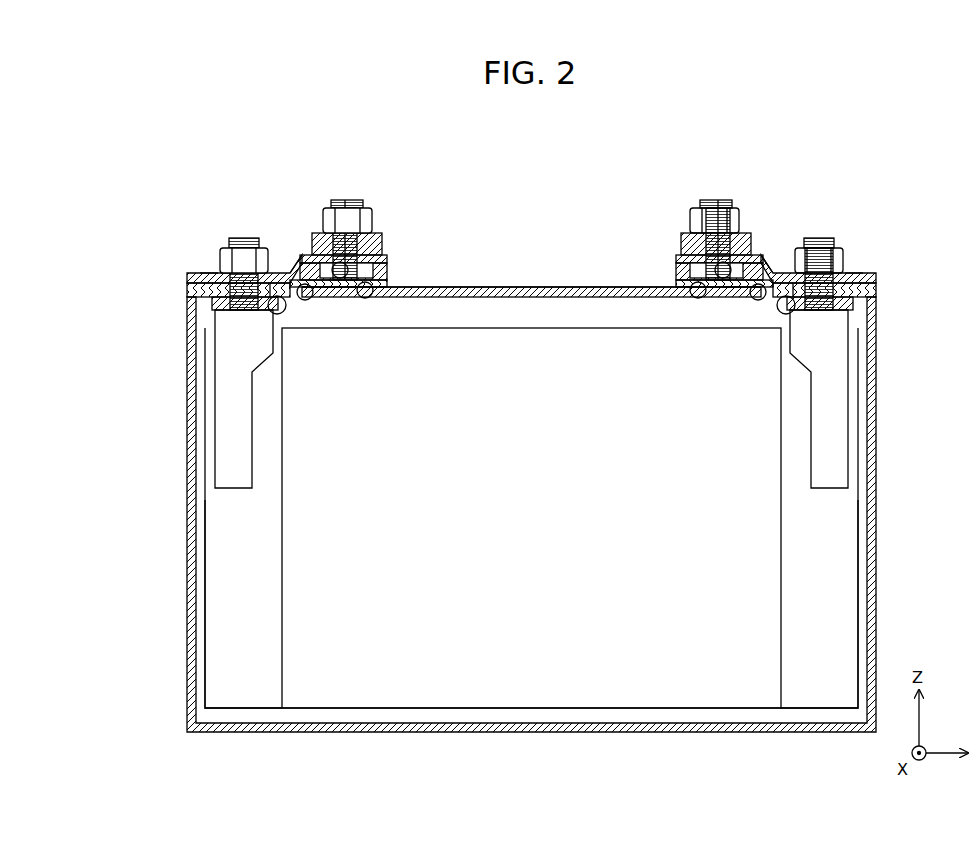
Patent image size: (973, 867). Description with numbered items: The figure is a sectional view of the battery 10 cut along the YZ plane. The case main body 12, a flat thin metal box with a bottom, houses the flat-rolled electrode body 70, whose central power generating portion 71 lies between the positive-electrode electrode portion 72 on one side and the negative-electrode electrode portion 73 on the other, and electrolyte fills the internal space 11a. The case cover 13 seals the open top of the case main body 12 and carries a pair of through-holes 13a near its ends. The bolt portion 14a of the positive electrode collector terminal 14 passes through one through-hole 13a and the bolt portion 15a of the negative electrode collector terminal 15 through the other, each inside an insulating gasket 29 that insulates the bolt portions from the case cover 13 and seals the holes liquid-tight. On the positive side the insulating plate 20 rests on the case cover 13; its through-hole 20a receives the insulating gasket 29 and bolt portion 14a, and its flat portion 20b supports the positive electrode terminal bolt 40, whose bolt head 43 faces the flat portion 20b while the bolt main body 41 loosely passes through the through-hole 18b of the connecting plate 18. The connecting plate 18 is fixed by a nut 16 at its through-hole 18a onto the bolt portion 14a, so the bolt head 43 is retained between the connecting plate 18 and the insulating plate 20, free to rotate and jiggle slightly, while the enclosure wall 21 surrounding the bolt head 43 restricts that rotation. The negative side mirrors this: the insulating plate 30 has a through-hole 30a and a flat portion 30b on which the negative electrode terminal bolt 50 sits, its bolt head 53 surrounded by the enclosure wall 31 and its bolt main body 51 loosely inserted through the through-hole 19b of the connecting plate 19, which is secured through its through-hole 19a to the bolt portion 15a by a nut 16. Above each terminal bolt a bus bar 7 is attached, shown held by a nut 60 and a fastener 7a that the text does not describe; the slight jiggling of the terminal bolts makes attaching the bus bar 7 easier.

The battery 10 is at (162, 656).
The internal space 11a is at (530, 312).
The case main body 12 is at (187, 424).
The case cover 13 is at (192, 292).
The through-hole 13a is at (280, 290).
The positive electrode collector terminal 14 is at (848, 420).
The bolt portion 14a is at (822, 240).
The negative electrode collector terminal 15 is at (215, 420).
The bolt portion 15a is at (240, 240).
The nut 16 is at (222, 254).
The connecting plate 18 is at (878, 277).
The through-hole 18a is at (843, 262).
The through-hole 18b is at (762, 264).
The connecting plate 19 is at (195, 275).
The through-hole 19a is at (215, 262).
The through-hole 19b is at (300, 262).
The insulating plate 20 is at (875, 290).
The through-hole 20a is at (800, 272).
The flat portion 20b is at (672, 290).
The enclosure wall 21 is at (677, 273).
The insulating gasket 29 is at (212, 303).
The insulating plate 30 is at (192, 287).
The gasket protrusion 30a is at (268, 272).
The flat portion 30b is at (388, 290).
The enclosure wall 31 is at (387, 273).
The positive electrode terminal bolt 40 is at (740, 160).
The bolt main body 41 is at (724, 200).
The bolt head 43 is at (714, 200).
The negative electrode terminal bolt 50 is at (360, 160).
The bolt main body 51 is at (340, 200).
The bolt head 53 is at (350, 200).
The nut 60 is at (365, 215).
The bus bar 7 is at (380, 241).
The terminal bolt 7a is at (320, 234).
The electrode body 70 is at (560, 712).
The power generating portion 71 is at (485, 685).
The positive-electrode electrode portion 72 is at (815, 578).
The negative-electrode electrode portion 73 is at (240, 575).